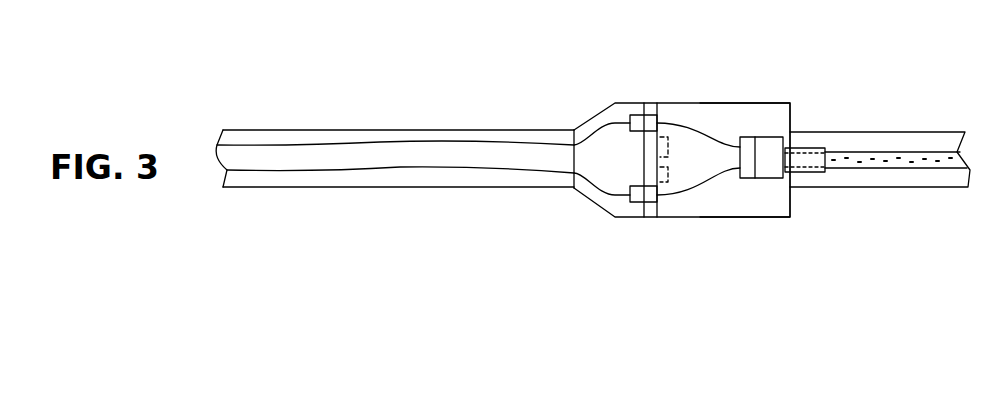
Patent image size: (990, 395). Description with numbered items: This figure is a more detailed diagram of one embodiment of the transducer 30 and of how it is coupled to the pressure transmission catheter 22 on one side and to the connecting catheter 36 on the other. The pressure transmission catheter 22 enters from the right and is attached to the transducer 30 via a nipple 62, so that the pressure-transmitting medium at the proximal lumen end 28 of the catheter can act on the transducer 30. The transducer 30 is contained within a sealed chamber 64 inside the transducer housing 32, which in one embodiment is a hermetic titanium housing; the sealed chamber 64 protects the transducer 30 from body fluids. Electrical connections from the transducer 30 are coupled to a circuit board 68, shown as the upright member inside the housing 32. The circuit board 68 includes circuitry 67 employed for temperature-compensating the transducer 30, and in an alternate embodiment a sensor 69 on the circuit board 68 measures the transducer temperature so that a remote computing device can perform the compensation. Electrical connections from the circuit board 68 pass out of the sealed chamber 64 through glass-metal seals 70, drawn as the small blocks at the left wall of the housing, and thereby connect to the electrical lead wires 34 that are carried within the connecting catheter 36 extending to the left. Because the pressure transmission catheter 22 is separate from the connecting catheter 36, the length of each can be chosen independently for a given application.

The pressure transmission catheter 22 is at (940, 132).
The proximal lumen end 28 is at (827, 172).
The transducer 30 is at (768, 180).
The transducer housing 32 is at (753, 100).
The electrical lead wires 34 is at (532, 173).
The connecting catheter 36 is at (463, 130).
The nipple 62 is at (800, 148).
The sealed chamber 64 is at (769, 113).
The circuitry 67 is at (668, 137).
The circuit board 68 is at (648, 217).
The sensor 69 is at (668, 176).
The glass-metal seals 70 is at (640, 115).